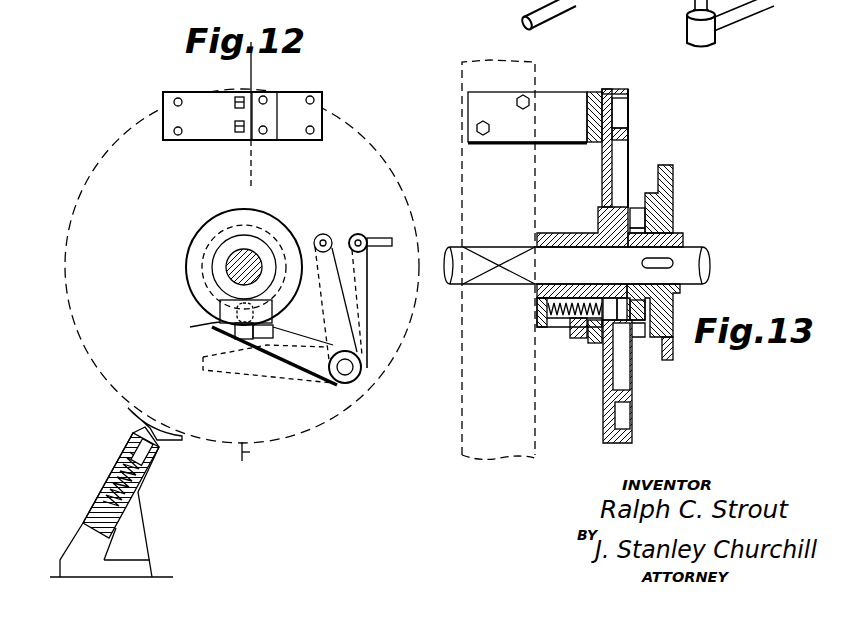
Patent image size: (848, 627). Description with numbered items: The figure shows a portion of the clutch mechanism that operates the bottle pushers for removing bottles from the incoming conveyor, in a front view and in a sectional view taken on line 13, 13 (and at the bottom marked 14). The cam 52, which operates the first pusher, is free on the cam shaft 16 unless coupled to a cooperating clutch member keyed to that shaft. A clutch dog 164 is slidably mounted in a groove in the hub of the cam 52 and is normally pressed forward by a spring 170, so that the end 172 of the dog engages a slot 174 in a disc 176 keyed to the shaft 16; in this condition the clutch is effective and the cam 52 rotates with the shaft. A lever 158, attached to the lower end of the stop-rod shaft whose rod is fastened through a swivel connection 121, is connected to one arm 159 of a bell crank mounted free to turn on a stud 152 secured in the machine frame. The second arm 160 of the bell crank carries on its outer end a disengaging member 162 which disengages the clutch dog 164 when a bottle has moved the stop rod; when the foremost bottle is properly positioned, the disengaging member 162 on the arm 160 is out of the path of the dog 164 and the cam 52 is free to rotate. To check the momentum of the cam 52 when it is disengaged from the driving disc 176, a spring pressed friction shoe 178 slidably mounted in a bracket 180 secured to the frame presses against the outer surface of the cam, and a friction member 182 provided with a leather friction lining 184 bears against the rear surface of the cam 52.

In FIG. 12, the section line 13 is at (251, 67).
In FIG. 12, the section line 14 is at (255, 453).
In FIG. 12, the cam shaft 16 is at (258, 250).
In FIG. 13, the cam shaft 16 is at (693, 249).
In FIG. 12, the cam 52 is at (354, 122).
In FIG. 13, the cam 52 is at (612, 90).
In FIG. 13, the swivel connection 121 is at (622, 108).
In FIG. 12, the stud 152 is at (345, 367).
In FIG. 13, the stud 152 is at (552, 18).
In FIG. 13, the lever 158 is at (745, 20).
In FIG. 12, the bell crank arm 159 is at (366, 293).
In FIG. 12, the second arm of bell crank 160 is at (287, 357).
In FIG. 13, the second arm of bell crank 160 is at (482, 7).
In FIG. 12, the disengaging member 162 is at (212, 327).
In FIG. 13, the disengaging member 162 is at (593, 348).
In FIG. 12, the clutch dog 164 is at (215, 348).
In FIG. 13, the clutch dog 164 is at (568, 335).
In FIG. 13, the spring 170 is at (560, 283).
In FIG. 13, the end of dog 172 is at (619, 330).
In FIG. 13, the slot 174 is at (645, 338).
In FIG. 13, the disc 176 is at (673, 177).
In FIG. 12, the friction shoe 178 is at (183, 440).
In FIG. 12, the bracket 180 is at (138, 532).
In FIG. 13, the friction member 182 is at (548, 95).
In FIG. 13, the leather friction lining 184 is at (597, 90).